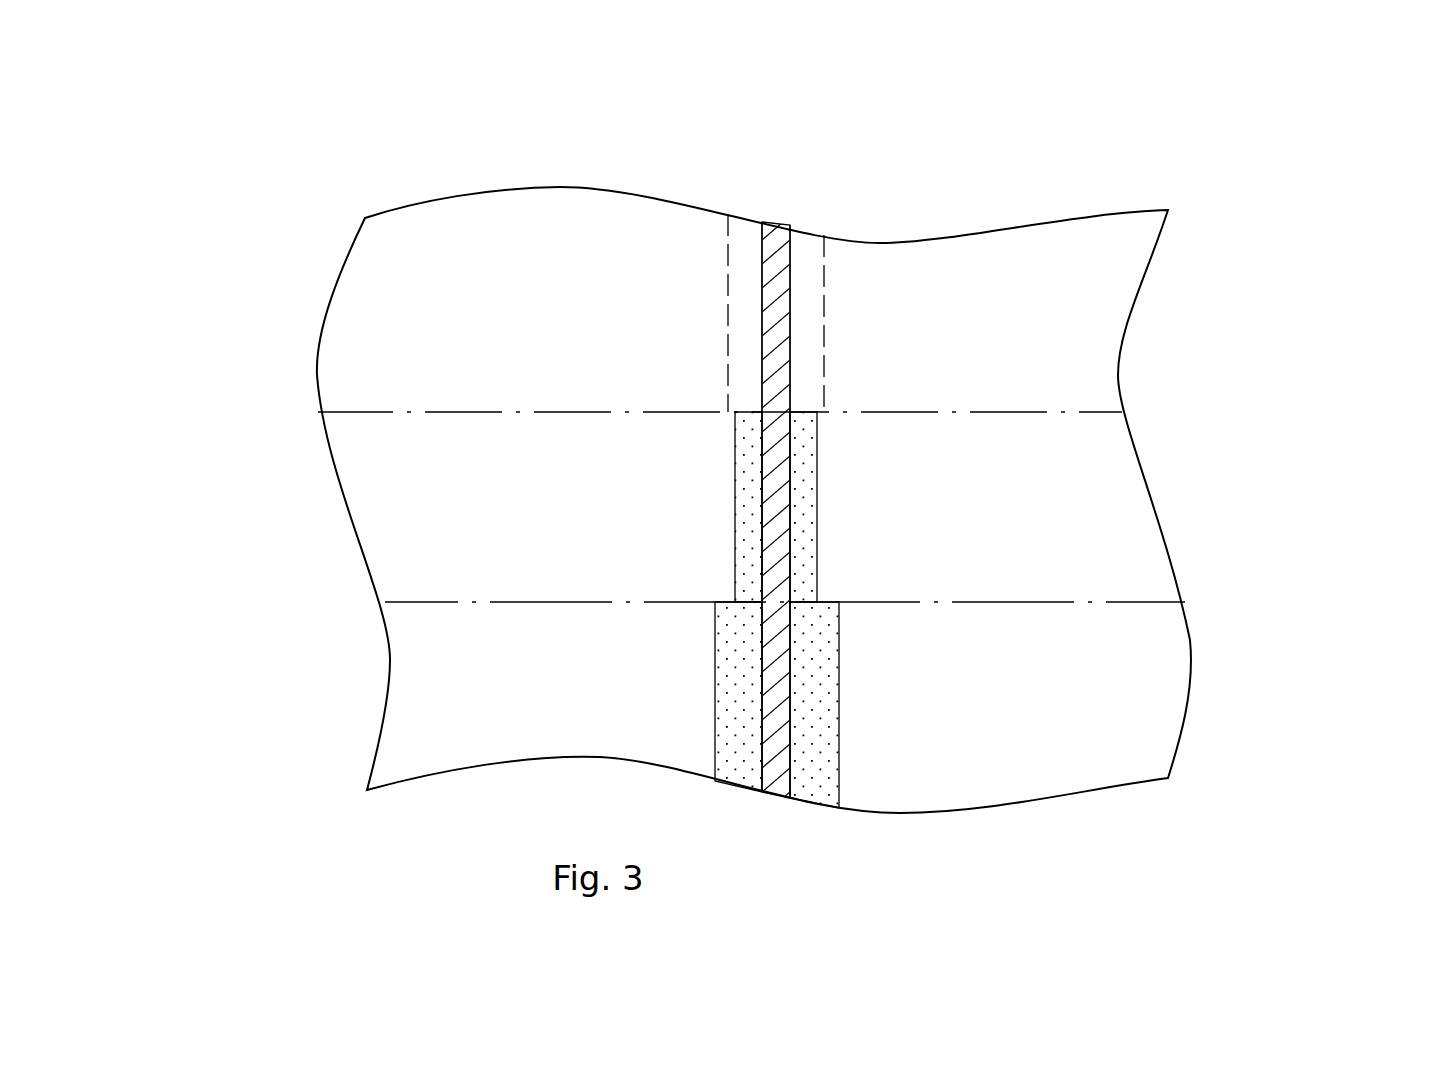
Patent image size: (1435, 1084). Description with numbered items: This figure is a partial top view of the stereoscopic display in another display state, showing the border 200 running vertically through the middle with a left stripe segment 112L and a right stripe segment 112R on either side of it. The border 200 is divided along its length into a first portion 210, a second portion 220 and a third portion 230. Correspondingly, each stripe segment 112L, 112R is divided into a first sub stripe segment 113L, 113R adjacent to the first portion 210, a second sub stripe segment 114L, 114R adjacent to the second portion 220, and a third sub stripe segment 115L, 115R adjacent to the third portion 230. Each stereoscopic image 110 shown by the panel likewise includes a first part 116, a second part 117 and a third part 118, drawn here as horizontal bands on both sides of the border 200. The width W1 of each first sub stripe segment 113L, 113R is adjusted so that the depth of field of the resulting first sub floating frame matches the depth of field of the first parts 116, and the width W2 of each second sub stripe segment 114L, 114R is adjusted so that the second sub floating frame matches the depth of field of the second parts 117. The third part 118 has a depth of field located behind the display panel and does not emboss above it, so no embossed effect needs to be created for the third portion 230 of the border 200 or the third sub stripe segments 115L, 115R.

The stereoscopic image 110 is at (192, 306).
The first part 116 is at (413, 703).
The second part 117 is at (372, 530).
The third part 118 is at (372, 338).
The stripe segment 112R is at (608, 112).
The first sub stripe segment 113R is at (728, 678).
The second sub stripe segment 114R is at (747, 570).
The third sub stripe segment 115R is at (743, 320).
The stripe segment 112L is at (945, 112).
The first sub stripe segment 113L is at (823, 678).
The second sub stripe segment 114L is at (805, 570).
The third sub stripe segment 115L is at (805, 320).
The border 200 is at (853, 857).
The first portion 210 is at (782, 757).
The second portion 220 is at (778, 543).
The third portion 230 is at (780, 353).
The width of first sub stripe segment W1 is at (714, 132).
The width of second sub stripe segment W2 is at (758, 150).